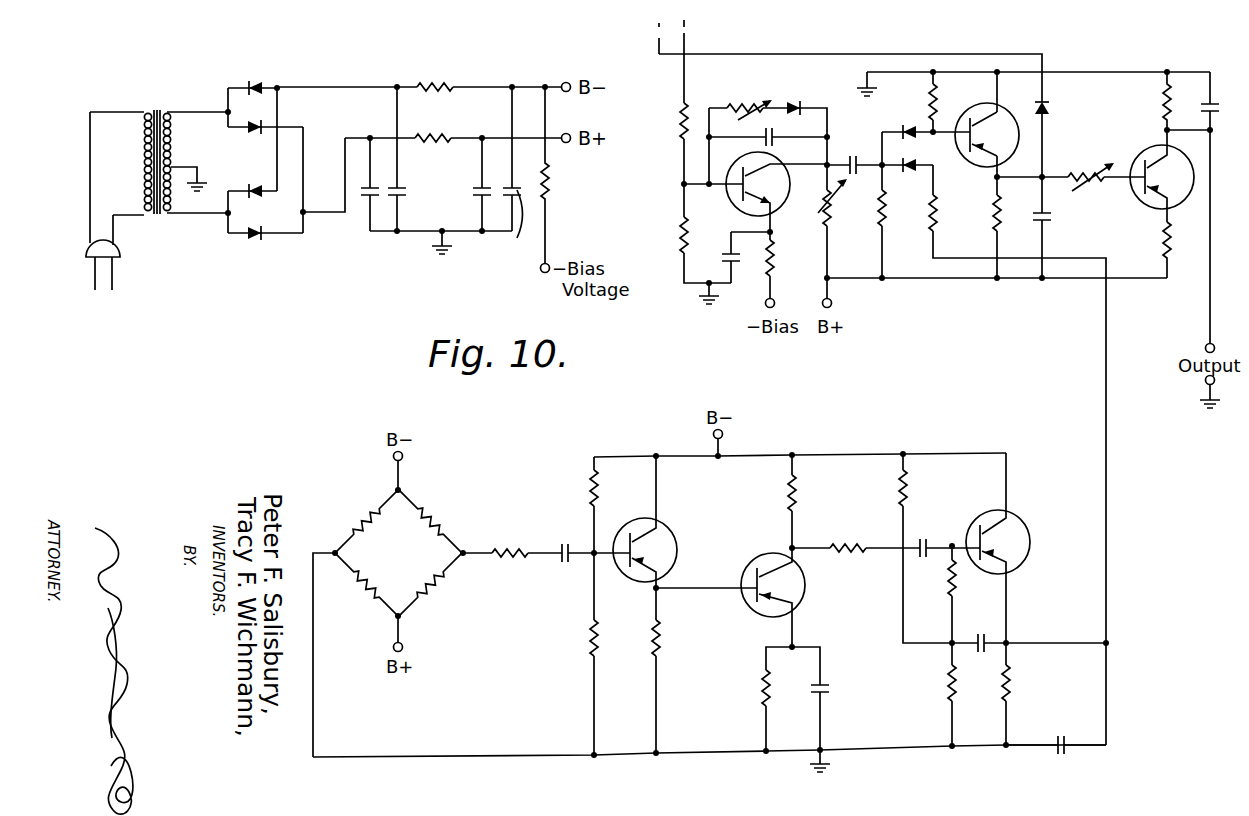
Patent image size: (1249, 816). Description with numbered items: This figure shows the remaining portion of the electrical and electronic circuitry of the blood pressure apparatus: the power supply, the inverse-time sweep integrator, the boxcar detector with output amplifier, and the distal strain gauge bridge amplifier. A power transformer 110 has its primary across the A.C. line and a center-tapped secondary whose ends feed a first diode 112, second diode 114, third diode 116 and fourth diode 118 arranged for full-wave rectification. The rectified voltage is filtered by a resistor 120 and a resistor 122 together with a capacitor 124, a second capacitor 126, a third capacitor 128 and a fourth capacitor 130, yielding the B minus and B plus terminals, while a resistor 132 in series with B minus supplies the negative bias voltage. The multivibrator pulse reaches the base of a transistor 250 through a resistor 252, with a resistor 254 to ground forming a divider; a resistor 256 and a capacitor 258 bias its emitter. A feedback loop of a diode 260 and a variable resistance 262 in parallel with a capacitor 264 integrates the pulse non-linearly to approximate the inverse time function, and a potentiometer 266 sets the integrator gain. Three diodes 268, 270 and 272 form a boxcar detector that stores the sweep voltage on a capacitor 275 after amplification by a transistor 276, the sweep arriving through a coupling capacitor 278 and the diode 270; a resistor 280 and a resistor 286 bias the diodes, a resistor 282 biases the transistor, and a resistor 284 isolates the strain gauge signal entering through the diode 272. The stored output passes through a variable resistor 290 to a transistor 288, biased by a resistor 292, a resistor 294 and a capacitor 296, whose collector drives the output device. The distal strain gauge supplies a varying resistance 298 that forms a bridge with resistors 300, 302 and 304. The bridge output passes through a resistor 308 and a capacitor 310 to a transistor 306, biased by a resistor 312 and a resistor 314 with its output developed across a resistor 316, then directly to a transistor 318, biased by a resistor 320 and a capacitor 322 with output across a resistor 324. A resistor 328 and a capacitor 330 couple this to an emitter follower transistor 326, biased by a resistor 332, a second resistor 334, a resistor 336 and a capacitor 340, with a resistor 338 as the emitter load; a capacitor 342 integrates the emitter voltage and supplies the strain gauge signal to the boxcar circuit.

The power transformer 110 is at (157, 200).
The first diode 112 is at (260, 72).
The second diode 114 is at (260, 141).
The third diode 116 is at (252, 178).
The fourth diode 118 is at (265, 253).
The resistor 120 is at (449, 70).
The resistor 122 is at (442, 127).
The capacitor 124 is at (422, 159).
The second capacitor 126 is at (357, 190).
The third capacitor 128 is at (524, 178).
The fourth capacitor 130 is at (464, 184).
The resistor 132 is at (569, 175).
The transistor 250 is at (776, 195).
The resistor 252 is at (663, 114).
The resistor 254 is at (664, 235).
The resistor 256 is at (793, 266).
The capacitor 258 is at (746, 269).
The diode 260 is at (803, 94).
The variable resistance 262 is at (747, 102).
The capacitor 264 is at (796, 145).
The variable resistance 266 is at (850, 205).
The diode 268 is at (1066, 109).
The diode 270 is at (905, 121).
The diode 272 is at (907, 179).
The capacitor 275 is at (1066, 227).
The transistor 276 is at (1002, 141).
The coupling capacitor 278 is at (860, 151).
The resistor 280 is at (916, 95).
The resistor 282 is at (1019, 209).
The resistor 284 is at (957, 213).
The resistor 286 is at (905, 219).
The transistor 288 is at (1147, 174).
The variable resistor 290 is at (1095, 189).
The resistor 292 is at (1189, 244).
The resistor 294 is at (1144, 101).
The capacitor 296 is at (1196, 118).
The varying electrical resistance 298 is at (447, 522).
The resistor 300 is at (442, 585).
The resistor 302 is at (375, 583).
The resistor 304 is at (367, 520).
The transistor 306 is at (668, 522).
The resistor 308 is at (518, 537).
The capacitor 310 is at (564, 566).
The resistor 312 is at (571, 484).
The resistor 314 is at (572, 645).
The resistor 316 is at (683, 638).
The transistor 318 is at (798, 597).
The resistor 320 is at (747, 688).
The capacitor 322 is at (844, 690).
The resistor 324 is at (820, 493).
The transistor 326 is at (1022, 548).
The resistor 328 is at (854, 532).
The capacitor 330 is at (930, 563).
The resistor 332 is at (978, 587).
The second resistor 334 is at (934, 683).
The resistor 336 is at (929, 489).
The resistor 338 is at (1035, 683).
The capacitor 340 is at (981, 630).
The capacitor 342 is at (1073, 731).